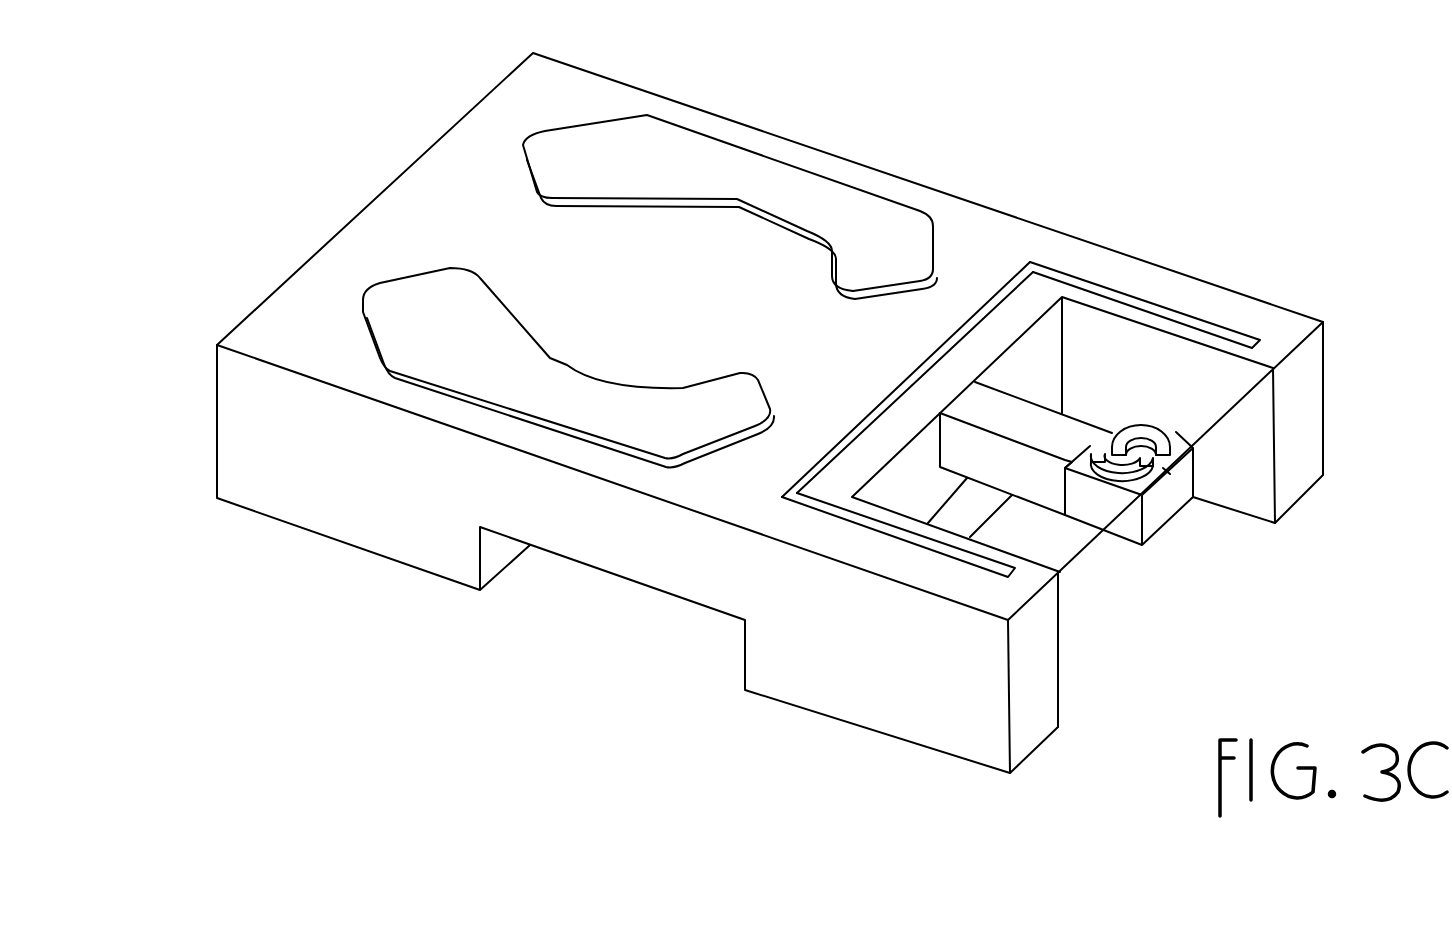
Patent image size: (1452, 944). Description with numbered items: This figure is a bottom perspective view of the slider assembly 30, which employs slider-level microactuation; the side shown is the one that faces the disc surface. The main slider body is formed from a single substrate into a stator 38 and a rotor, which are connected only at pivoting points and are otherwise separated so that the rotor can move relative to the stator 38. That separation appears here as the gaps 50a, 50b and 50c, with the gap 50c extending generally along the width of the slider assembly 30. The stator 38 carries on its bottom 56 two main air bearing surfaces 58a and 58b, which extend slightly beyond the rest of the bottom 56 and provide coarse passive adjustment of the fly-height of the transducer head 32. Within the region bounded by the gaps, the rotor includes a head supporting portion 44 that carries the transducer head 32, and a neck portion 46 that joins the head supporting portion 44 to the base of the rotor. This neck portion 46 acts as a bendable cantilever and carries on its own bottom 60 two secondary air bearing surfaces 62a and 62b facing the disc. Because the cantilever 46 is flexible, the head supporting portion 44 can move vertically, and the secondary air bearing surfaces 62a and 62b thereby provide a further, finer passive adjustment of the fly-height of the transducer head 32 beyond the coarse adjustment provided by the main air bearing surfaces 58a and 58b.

The slider assembly 30 is at (1090, 219).
The transducer head 32 is at (1158, 472).
The stator 38 is at (243, 445).
The head supporting portion 44 is at (1163, 513).
The neck portion (bendable cantilever) 46 is at (1038, 472).
The gap 50a is at (890, 530).
The gap 50b is at (1153, 310).
The gap 50c is at (855, 435).
The bottom 56 is at (288, 347).
The air bearing surface 58a is at (707, 160).
The air bearing surface 58b is at (393, 295).
The bottom 60 is at (982, 412).
The secondary air bearing surface 62a is at (1135, 428).
The secondary air bearing surface 62b is at (1118, 463).